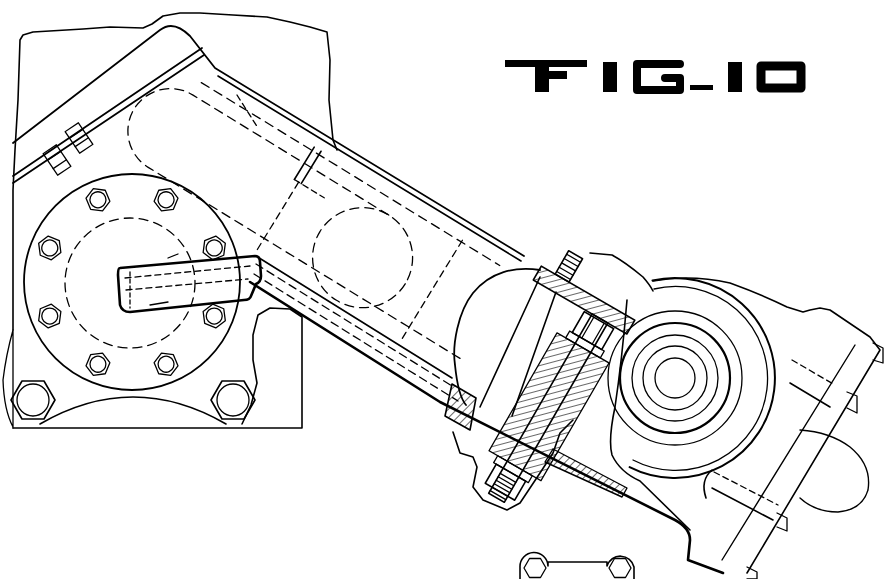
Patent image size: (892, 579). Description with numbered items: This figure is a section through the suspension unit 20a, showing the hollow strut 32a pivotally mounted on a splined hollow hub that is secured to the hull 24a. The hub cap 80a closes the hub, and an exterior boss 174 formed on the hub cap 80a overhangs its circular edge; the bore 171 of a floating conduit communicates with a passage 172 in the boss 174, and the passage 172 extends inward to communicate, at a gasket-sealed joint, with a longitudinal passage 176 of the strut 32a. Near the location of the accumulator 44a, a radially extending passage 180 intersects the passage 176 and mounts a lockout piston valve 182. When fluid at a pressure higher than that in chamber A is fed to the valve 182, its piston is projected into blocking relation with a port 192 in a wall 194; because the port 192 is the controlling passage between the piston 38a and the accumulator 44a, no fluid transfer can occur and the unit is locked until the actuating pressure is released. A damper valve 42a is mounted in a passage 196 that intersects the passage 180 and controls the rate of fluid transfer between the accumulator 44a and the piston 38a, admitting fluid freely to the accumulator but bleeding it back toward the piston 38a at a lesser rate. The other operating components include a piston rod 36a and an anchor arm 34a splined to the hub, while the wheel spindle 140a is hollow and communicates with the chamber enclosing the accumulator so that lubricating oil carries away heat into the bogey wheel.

The suspension unit 20a is at (489, 182).
The hull 24a is at (322, 45).
The hollow strut 32a is at (372, 173).
The anchor arm 34a is at (75, 131).
The piston rod 36a is at (279, 117).
The piston 38a is at (490, 221).
The damper valve 42a is at (579, 287).
The accumulator 44a is at (607, 450).
The hub cap 80a is at (132, 282).
The wheel spindle 140a is at (710, 323).
The bore 171 is at (120, 288).
The passage 172 is at (178, 256).
The exterior boss 174 is at (160, 313).
The longitudinal passage 176 is at (462, 423).
The radially extending passage 180 is at (513, 387).
The lockout piston valve 182 is at (543, 485).
The port 192 is at (524, 319).
The wall 194 is at (548, 327).
The passage 196 is at (595, 358).
The chamber A is at (514, 262).